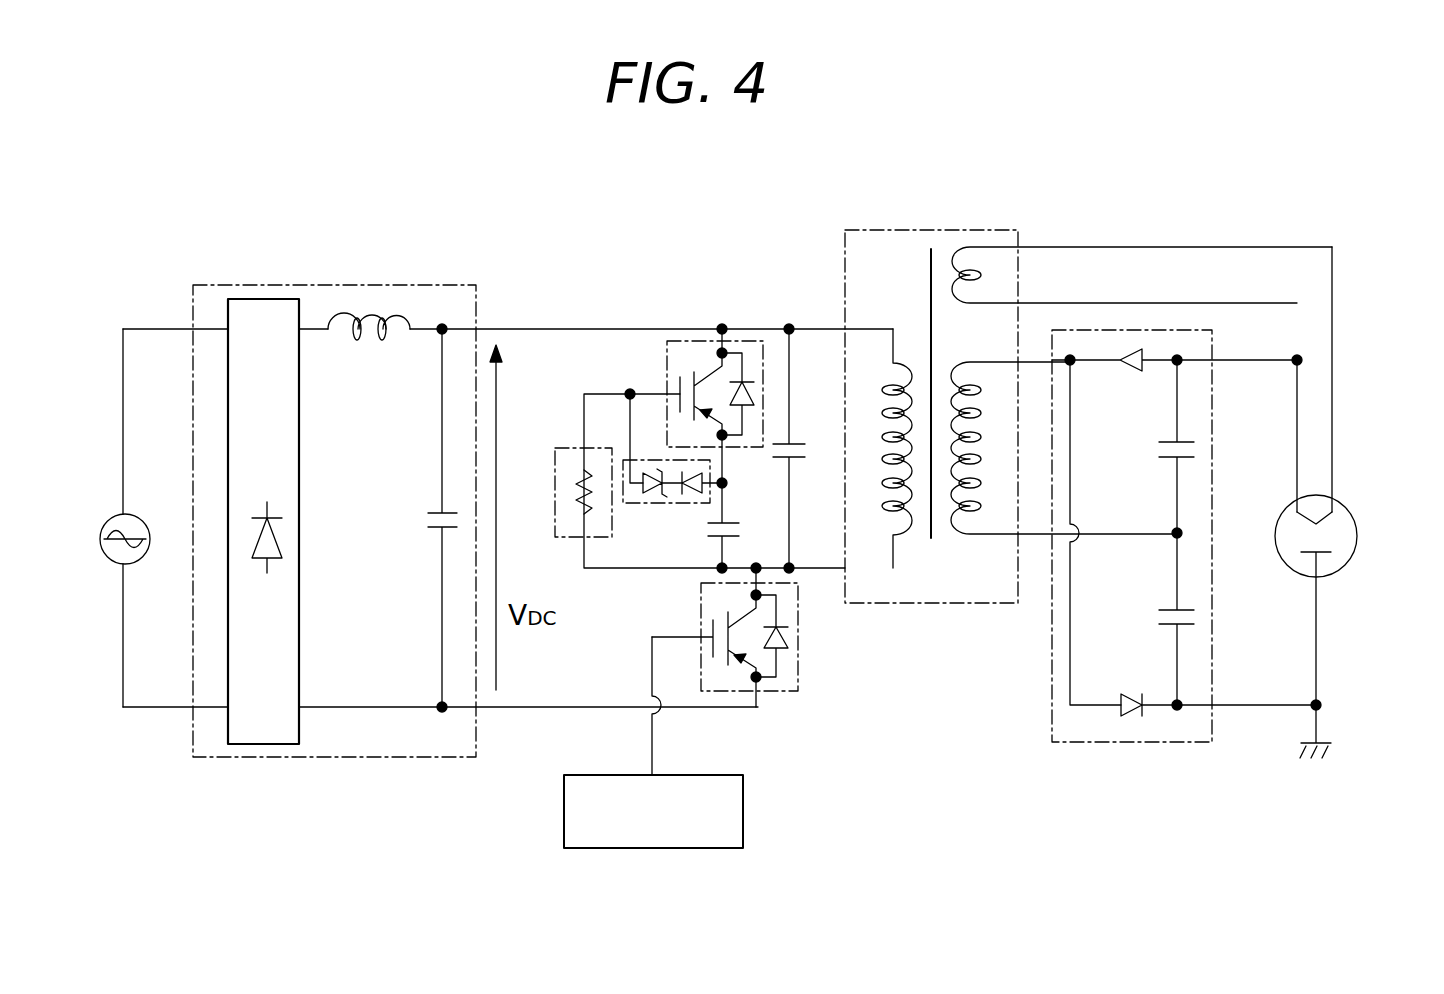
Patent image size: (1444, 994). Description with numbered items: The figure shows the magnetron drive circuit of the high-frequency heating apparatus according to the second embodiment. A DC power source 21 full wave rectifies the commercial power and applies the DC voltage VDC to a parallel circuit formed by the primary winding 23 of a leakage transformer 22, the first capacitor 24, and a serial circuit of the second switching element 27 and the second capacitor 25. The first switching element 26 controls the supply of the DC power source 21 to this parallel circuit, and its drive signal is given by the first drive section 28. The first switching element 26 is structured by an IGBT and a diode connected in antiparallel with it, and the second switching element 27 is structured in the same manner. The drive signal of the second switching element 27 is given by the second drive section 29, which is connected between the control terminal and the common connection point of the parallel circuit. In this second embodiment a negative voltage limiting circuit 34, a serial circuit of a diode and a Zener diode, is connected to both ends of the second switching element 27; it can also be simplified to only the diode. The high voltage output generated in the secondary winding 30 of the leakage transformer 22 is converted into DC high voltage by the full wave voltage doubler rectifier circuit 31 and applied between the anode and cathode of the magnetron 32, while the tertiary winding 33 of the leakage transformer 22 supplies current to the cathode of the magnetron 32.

The DC power source 21 is at (361, 286).
The leakage transformer 22 is at (1050, 413).
The primary winding 23 is at (893, 388).
The first capacitor 24 is at (800, 458).
The second capacitor 25 is at (724, 520).
The first switching element 26 is at (800, 660).
The second switching element 27 is at (667, 382).
The first drive section 28 is at (745, 800).
The second drive section 29 is at (555, 467).
The secondary winding 30 is at (972, 512).
The full wave voltage doubler rectifier circuit 31 is at (1213, 347).
The magnetron 32 is at (1356, 520).
The tertiary winding 33 is at (970, 305).
The negative voltage limiting circuit 34 is at (672, 503).